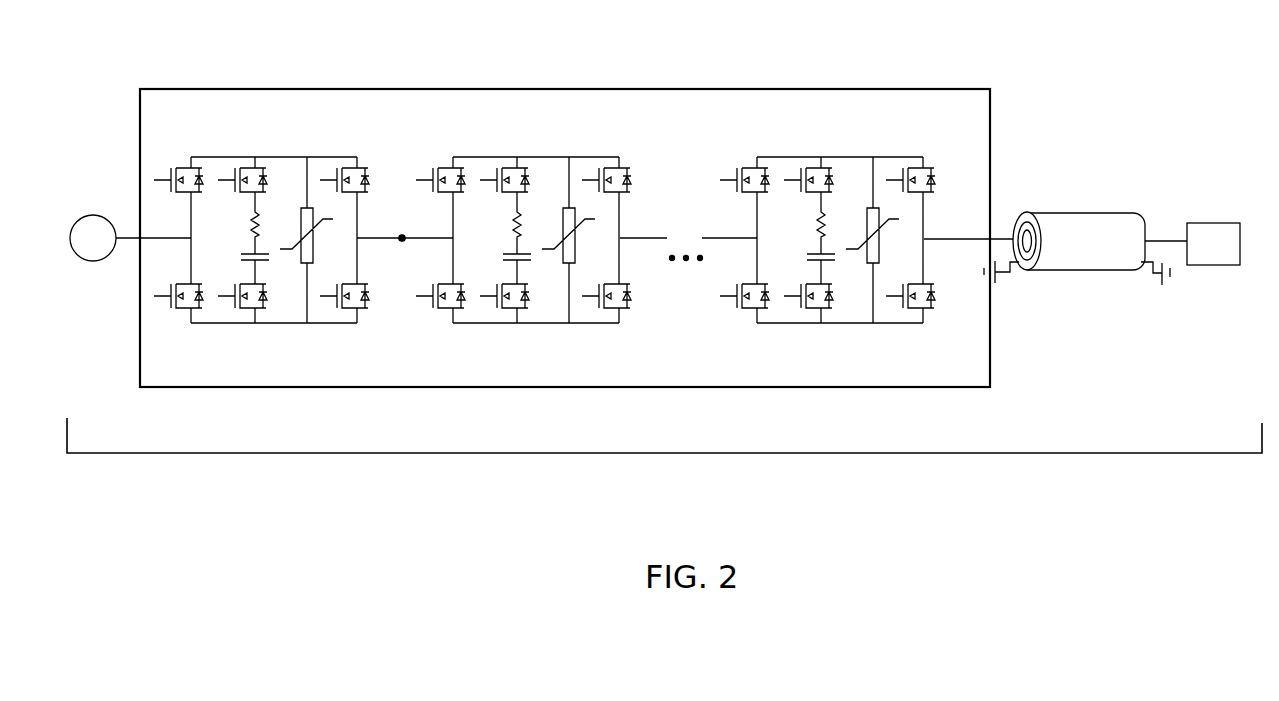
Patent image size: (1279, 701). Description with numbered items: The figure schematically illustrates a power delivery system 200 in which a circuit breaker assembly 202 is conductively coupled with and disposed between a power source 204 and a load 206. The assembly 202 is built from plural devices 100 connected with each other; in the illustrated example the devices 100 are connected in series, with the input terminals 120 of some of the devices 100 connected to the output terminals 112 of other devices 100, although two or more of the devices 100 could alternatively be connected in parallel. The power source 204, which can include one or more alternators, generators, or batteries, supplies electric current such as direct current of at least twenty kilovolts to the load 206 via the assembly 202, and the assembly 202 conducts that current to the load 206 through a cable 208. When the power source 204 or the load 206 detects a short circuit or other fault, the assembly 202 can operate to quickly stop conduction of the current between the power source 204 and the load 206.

The device 100 is at (347, 150).
The output terminal 112 is at (403, 242).
The input terminal 120 is at (163, 238).
The power delivery system 200 is at (663, 457).
The circuit breaker assembly 202 is at (553, 88).
The power source 204 is at (95, 215).
The load 206 is at (1231, 254).
The cable 208 is at (1087, 213).